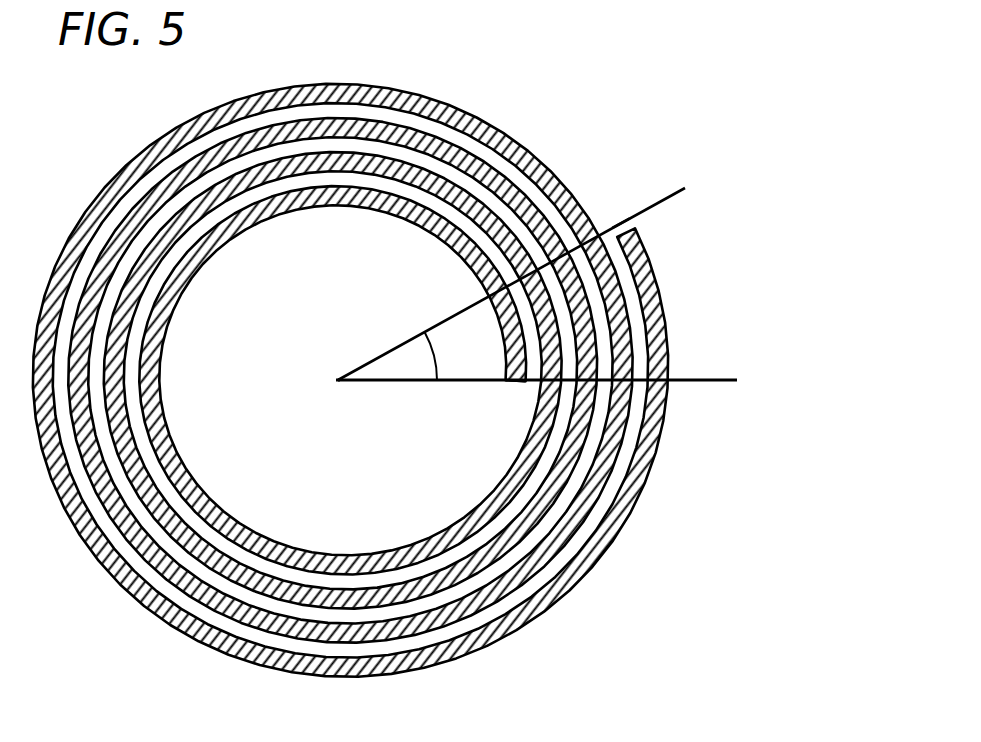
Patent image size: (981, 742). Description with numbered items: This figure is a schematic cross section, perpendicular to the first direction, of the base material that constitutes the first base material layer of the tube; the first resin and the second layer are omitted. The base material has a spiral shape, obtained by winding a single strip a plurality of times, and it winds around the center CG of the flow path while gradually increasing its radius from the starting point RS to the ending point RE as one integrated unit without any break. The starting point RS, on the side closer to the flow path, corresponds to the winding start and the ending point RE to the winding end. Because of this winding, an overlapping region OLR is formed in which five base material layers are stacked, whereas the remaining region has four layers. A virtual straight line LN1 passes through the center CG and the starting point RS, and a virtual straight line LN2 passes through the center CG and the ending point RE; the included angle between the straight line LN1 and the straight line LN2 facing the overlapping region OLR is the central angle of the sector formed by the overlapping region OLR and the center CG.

The overlapping region OLR is at (700, 315).
The straight line LN1 is at (703, 386).
The straight line LN2 is at (673, 212).
The center CG is at (322, 399).
The starting point RS is at (512, 383).
The ending point RE is at (612, 223).